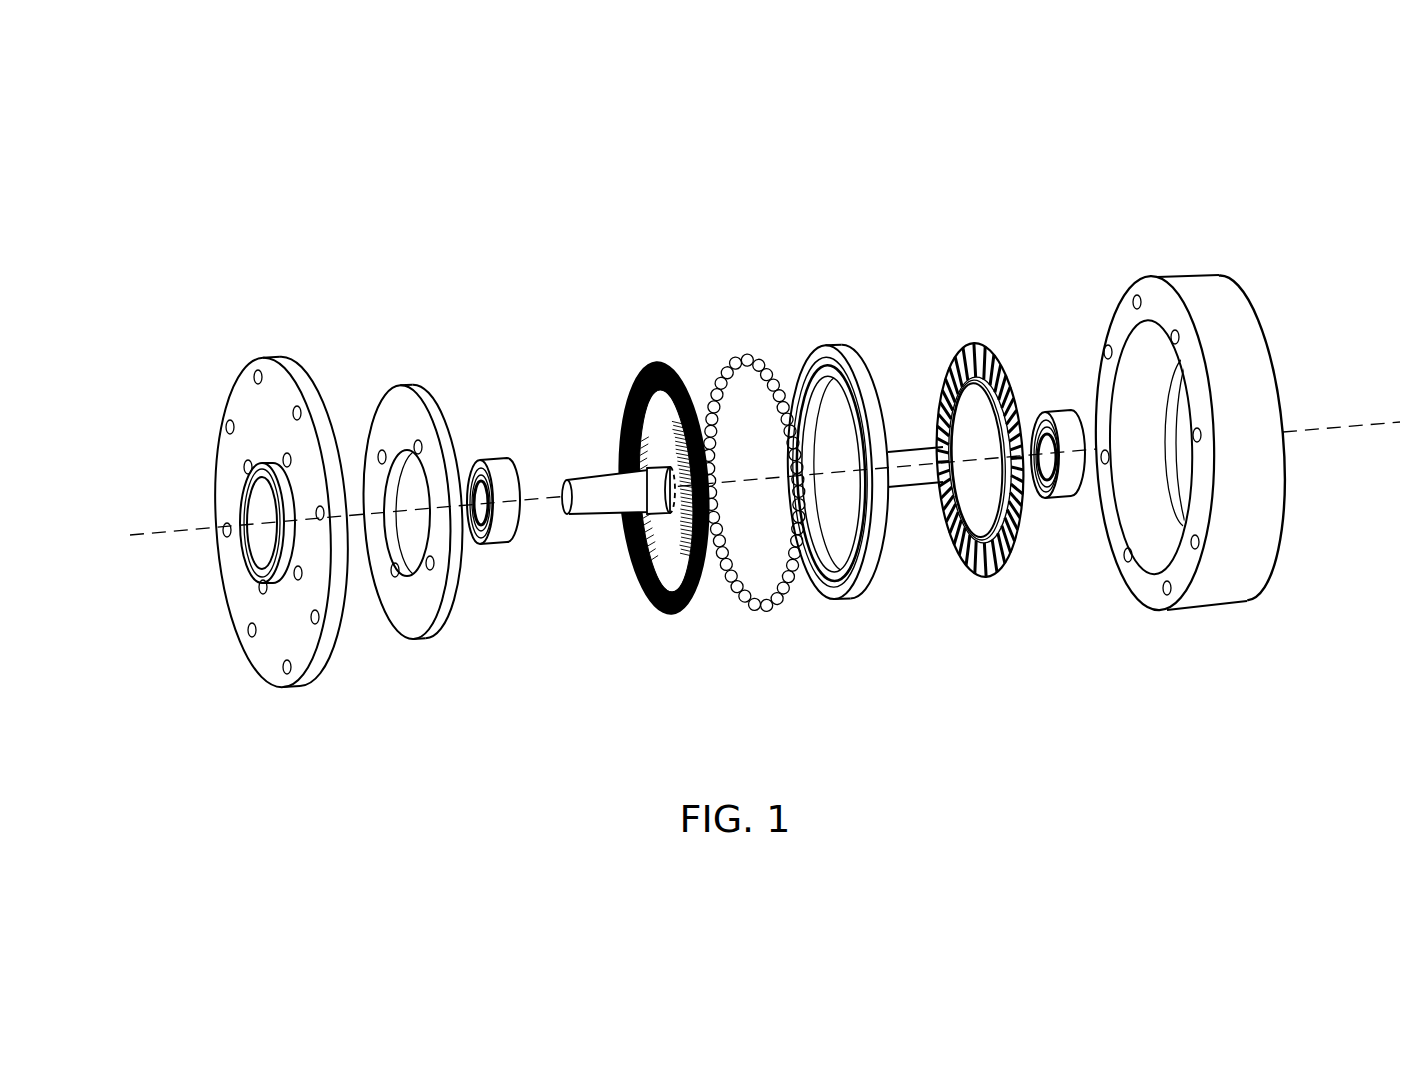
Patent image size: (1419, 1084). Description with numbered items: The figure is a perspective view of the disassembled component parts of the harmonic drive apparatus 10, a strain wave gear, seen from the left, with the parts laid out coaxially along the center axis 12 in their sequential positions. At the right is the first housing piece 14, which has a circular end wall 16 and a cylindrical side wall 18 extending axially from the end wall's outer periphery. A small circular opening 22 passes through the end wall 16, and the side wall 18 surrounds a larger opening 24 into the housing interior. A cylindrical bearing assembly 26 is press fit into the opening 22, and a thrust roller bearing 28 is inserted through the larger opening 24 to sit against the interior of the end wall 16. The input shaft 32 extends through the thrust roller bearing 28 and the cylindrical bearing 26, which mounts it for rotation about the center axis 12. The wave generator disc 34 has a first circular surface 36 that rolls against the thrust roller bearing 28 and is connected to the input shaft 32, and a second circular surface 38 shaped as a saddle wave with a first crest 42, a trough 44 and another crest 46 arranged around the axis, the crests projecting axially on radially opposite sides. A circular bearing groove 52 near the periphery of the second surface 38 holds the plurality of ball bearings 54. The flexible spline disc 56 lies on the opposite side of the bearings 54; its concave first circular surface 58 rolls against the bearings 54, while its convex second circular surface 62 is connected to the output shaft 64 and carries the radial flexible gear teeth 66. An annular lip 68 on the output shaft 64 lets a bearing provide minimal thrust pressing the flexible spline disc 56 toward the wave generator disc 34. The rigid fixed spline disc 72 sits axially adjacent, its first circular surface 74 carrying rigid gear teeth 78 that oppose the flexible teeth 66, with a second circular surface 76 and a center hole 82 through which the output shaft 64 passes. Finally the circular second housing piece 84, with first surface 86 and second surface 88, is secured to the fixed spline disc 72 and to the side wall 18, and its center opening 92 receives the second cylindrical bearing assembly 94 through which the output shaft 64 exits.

The harmonic drive apparatus 10 is at (905, 214).
The center axis 12 is at (172, 533).
The first housing piece 14 is at (1167, 446).
The circular end wall 16 is at (1187, 515).
The cylindrical side wall 18 is at (1223, 592).
The small circular opening 22 is at (1190, 432).
The larger opening 24 is at (1143, 508).
The cylindrical bearing assembly 26 is at (1068, 418).
The thrust roller bearing 28 is at (993, 577).
The input shaft 32 is at (915, 452).
The wave generator disc 34 is at (828, 448).
The first circular surface 36 is at (860, 358).
The second circular surface 38 is at (803, 362).
The first crest 42 is at (825, 400).
The trough 44 is at (934, 468).
The crest 46 is at (845, 600).
The circular bearing groove 52 is at (831, 347).
The bearings 54 is at (744, 464).
The flexible spline disc 56 is at (680, 617).
The first circular surface 58 is at (646, 398).
The second circular surface 62 is at (645, 502).
The output shaft 64 is at (610, 488).
The flexible gear teeth 66 is at (655, 600).
The annular lip 68 is at (640, 457).
The fixed spline disc 72 is at (415, 387).
The first circular surface 74 is at (430, 397).
The second circular surface 76 is at (392, 397).
The rigid gear teeth 78 is at (432, 510).
The center hole 82 is at (410, 553).
The second housing piece 84 is at (252, 494).
The first surface 86 is at (293, 357).
The second surface 88 is at (240, 390).
The center opening 92 is at (257, 555).
The second cylindrical bearing assembly 94 is at (507, 537).